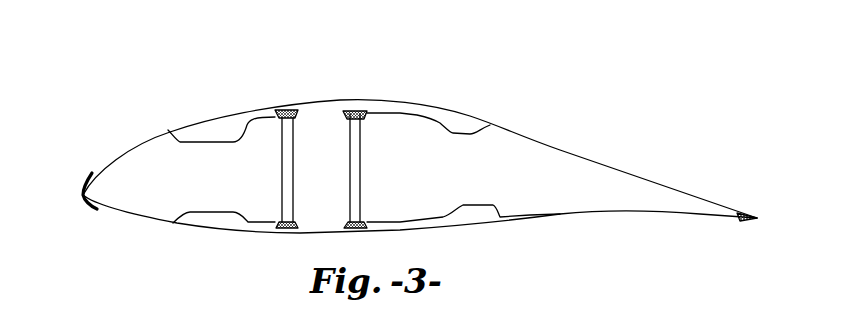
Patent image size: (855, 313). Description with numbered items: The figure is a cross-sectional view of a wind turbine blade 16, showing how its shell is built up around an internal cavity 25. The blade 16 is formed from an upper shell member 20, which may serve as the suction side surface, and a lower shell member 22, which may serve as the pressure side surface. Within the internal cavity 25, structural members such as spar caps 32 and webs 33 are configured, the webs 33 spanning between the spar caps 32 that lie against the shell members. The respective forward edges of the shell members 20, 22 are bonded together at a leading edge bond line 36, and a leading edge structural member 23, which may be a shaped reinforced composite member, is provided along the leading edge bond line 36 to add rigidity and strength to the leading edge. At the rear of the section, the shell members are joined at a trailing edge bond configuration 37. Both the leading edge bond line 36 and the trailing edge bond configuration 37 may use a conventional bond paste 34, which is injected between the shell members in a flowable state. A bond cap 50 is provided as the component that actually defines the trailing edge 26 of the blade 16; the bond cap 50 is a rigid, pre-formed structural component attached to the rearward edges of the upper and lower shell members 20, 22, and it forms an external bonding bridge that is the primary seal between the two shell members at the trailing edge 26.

The wind turbine blade 16 is at (480, 72).
The upper shell member 20 is at (325, 103).
The lower shell member 22 is at (282, 233).
The leading edge structural member 23 is at (82, 198).
The internal cavity 25 is at (508, 152).
The trailing edge 26 is at (757, 222).
The spar caps 32 is at (417, 115).
The webs 33 is at (285, 168).
The bond paste 34 is at (733, 212).
The leading edge bond line 36 is at (80, 188).
The trailing edge bond configuration 37 is at (677, 226).
The bond cap 50 is at (743, 216).